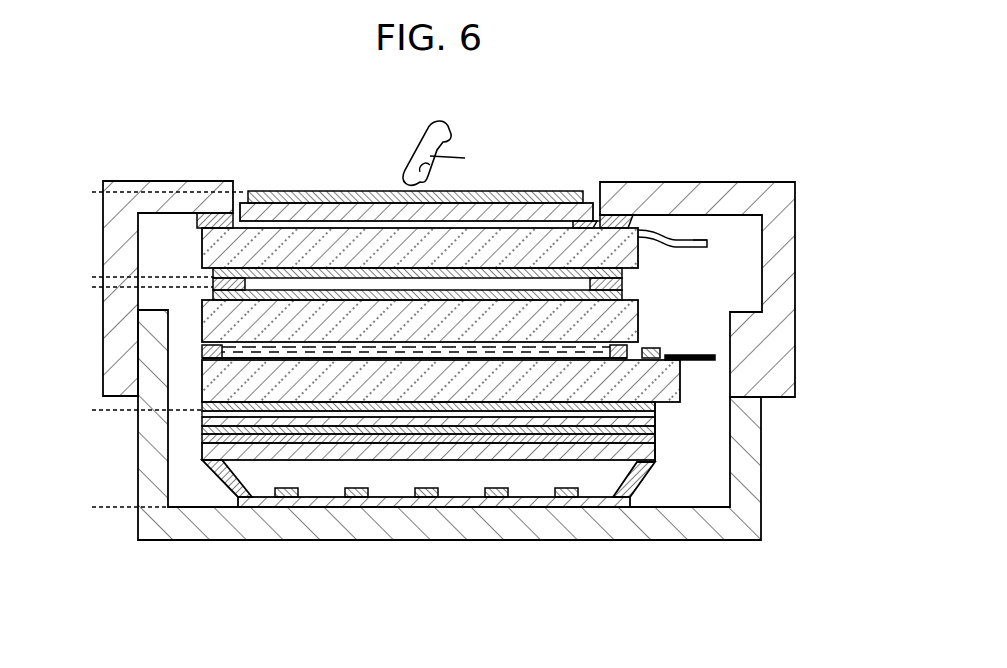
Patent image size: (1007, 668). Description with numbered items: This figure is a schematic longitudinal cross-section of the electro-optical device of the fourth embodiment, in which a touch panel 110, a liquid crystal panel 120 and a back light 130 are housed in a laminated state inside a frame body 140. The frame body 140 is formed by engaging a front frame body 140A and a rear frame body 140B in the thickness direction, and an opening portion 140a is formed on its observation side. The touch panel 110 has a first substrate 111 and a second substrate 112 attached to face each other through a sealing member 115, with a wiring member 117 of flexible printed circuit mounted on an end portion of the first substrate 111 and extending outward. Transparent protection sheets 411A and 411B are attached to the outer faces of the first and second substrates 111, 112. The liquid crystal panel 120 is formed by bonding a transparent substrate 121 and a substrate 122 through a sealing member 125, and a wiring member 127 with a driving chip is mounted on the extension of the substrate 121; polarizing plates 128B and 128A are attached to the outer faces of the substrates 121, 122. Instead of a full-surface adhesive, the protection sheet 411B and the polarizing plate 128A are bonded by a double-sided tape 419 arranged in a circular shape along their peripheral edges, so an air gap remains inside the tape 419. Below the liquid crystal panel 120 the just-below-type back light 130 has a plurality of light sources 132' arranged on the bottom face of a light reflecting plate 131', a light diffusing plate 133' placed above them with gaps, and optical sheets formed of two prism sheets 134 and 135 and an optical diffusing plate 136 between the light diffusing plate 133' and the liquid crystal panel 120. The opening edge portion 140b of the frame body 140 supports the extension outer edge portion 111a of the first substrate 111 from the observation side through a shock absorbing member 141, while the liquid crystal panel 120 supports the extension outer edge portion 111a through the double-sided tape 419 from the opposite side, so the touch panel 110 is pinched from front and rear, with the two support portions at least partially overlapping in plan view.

The frame body 140 is at (118, 176).
The opening edge portion 140b is at (173, 180).
The front frame body 140A is at (790, 218).
The rear frame body 140B is at (755, 517).
The opening portion 140a is at (592, 190).
The touch panel 110 is at (92, 192).
The liquid crystal panel 120 is at (92, 287).
The back light 130 is at (92, 415).
The transparent protection sheet 411A is at (270, 191).
The transparent protection sheet 411B is at (493, 272).
The second substrate 112 is at (342, 190).
The sealing member 115 is at (570, 205).
The shock absorbing member 141 is at (633, 215).
The first substrate 111 is at (532, 235).
The extension outer edge portion 111a is at (638, 263).
The wiring member 117 is at (693, 243).
The double-sided tape 419 is at (625, 285).
The polarizing plate 128A is at (638, 300).
The transparent substrate 121 is at (700, 360).
The sealing member 125 is at (637, 342).
The wiring member 127 is at (670, 395).
The polarizing plate 128B is at (665, 403).
The substrate 122 is at (345, 343).
The light reflecting plate 131' is at (411, 531).
The light sources 132' is at (416, 545).
The light diffusing plate 133' is at (428, 502).
The prism sheet 134 is at (457, 447).
The prism sheet 135 is at (523, 426).
The optical diffusing plate 136 is at (587, 418).